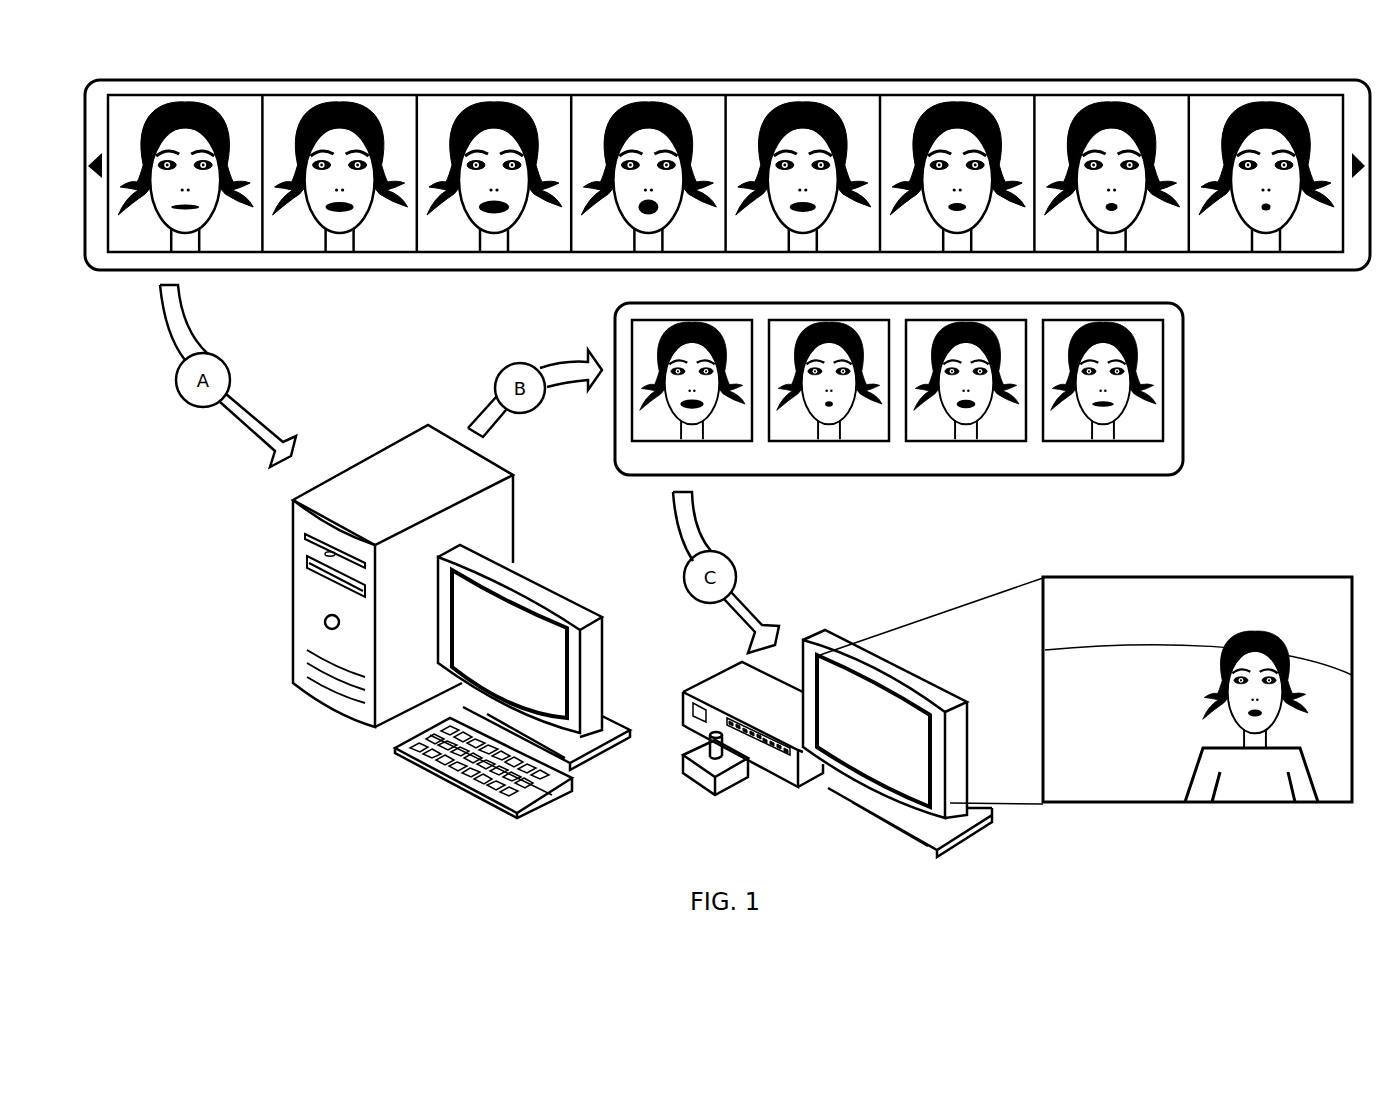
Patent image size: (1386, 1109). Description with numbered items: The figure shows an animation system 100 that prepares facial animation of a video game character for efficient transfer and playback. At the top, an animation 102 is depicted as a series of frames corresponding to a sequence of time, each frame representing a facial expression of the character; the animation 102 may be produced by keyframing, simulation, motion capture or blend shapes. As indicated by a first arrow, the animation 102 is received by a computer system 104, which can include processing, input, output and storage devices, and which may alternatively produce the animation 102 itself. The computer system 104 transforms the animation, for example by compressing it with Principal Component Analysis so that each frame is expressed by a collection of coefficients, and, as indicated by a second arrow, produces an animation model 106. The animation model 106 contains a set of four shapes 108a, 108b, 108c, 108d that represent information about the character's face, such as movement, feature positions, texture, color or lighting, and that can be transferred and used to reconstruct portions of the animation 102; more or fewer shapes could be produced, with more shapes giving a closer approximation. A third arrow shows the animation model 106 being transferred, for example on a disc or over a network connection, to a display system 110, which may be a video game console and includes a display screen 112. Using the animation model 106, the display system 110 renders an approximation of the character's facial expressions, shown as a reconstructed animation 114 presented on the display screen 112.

The animation system 100 is at (186, 808).
The animation 102 is at (170, 80).
The computer system 104 is at (278, 596).
The animation model 106 is at (1123, 476).
The shape 108a is at (643, 443).
The shape 108b is at (780, 443).
The shape 108c is at (917, 443).
The shape 108d is at (1054, 443).
The display system 110 is at (746, 801).
The display screen 112 is at (1112, 804).
The reconstructed animation 114 is at (1244, 640).